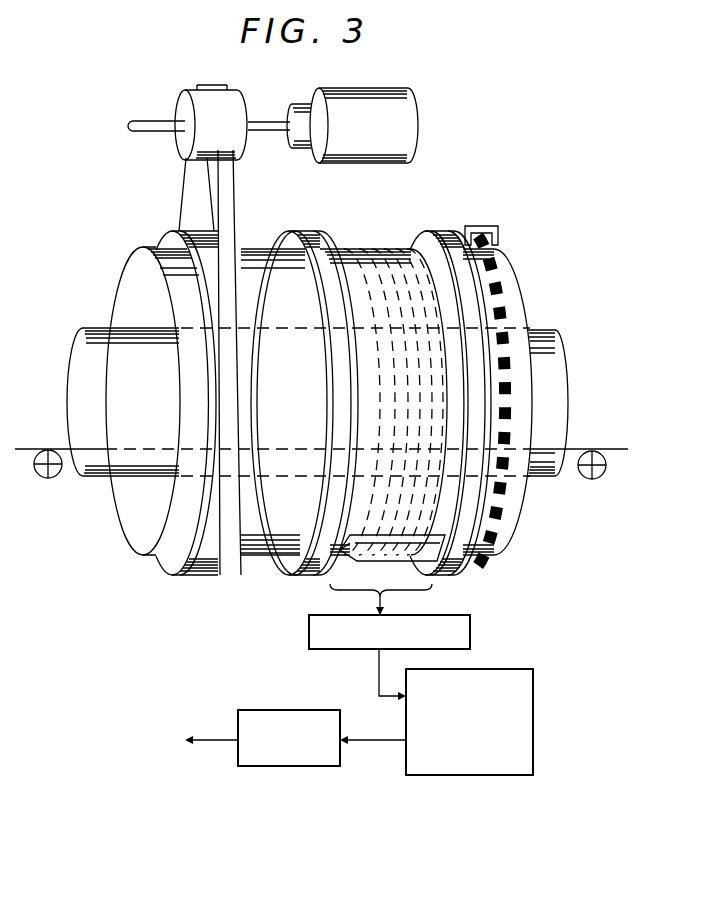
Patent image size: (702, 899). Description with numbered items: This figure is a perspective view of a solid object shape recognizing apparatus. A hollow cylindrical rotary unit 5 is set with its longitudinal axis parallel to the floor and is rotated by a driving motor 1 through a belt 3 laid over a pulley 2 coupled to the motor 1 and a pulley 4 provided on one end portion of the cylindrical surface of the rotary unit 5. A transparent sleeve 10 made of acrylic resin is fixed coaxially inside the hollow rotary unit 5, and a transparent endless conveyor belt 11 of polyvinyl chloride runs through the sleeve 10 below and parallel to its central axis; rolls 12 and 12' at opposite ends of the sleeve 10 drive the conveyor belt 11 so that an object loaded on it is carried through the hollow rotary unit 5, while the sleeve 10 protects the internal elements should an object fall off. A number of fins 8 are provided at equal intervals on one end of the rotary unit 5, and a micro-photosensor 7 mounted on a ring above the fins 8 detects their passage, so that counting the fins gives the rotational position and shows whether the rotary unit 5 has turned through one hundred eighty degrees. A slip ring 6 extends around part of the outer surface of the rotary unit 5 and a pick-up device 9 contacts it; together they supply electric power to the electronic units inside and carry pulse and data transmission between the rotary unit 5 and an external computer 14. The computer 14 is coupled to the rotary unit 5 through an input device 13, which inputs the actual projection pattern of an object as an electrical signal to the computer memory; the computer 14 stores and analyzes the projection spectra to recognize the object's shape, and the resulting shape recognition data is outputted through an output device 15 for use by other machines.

The driving motor 1 is at (403, 108).
The pulley 2 is at (238, 102).
The belt 3 is at (228, 188).
The pulley 4 is at (243, 297).
The cylindrical rotary unit 5 is at (512, 278).
The slip ring 6 is at (370, 252).
The micro-photosensor 7 is at (500, 232).
The fins 8 is at (508, 306).
The pick-up device 9 is at (360, 552).
The transparent sleeve 10 is at (560, 363).
The transparent endless conveyor belt 11 is at (607, 447).
The roll 12 is at (53, 486).
The roll 12' is at (583, 487).
The input device 13 is at (470, 622).
The computer 14 is at (526, 693).
The output device 15 is at (295, 721).